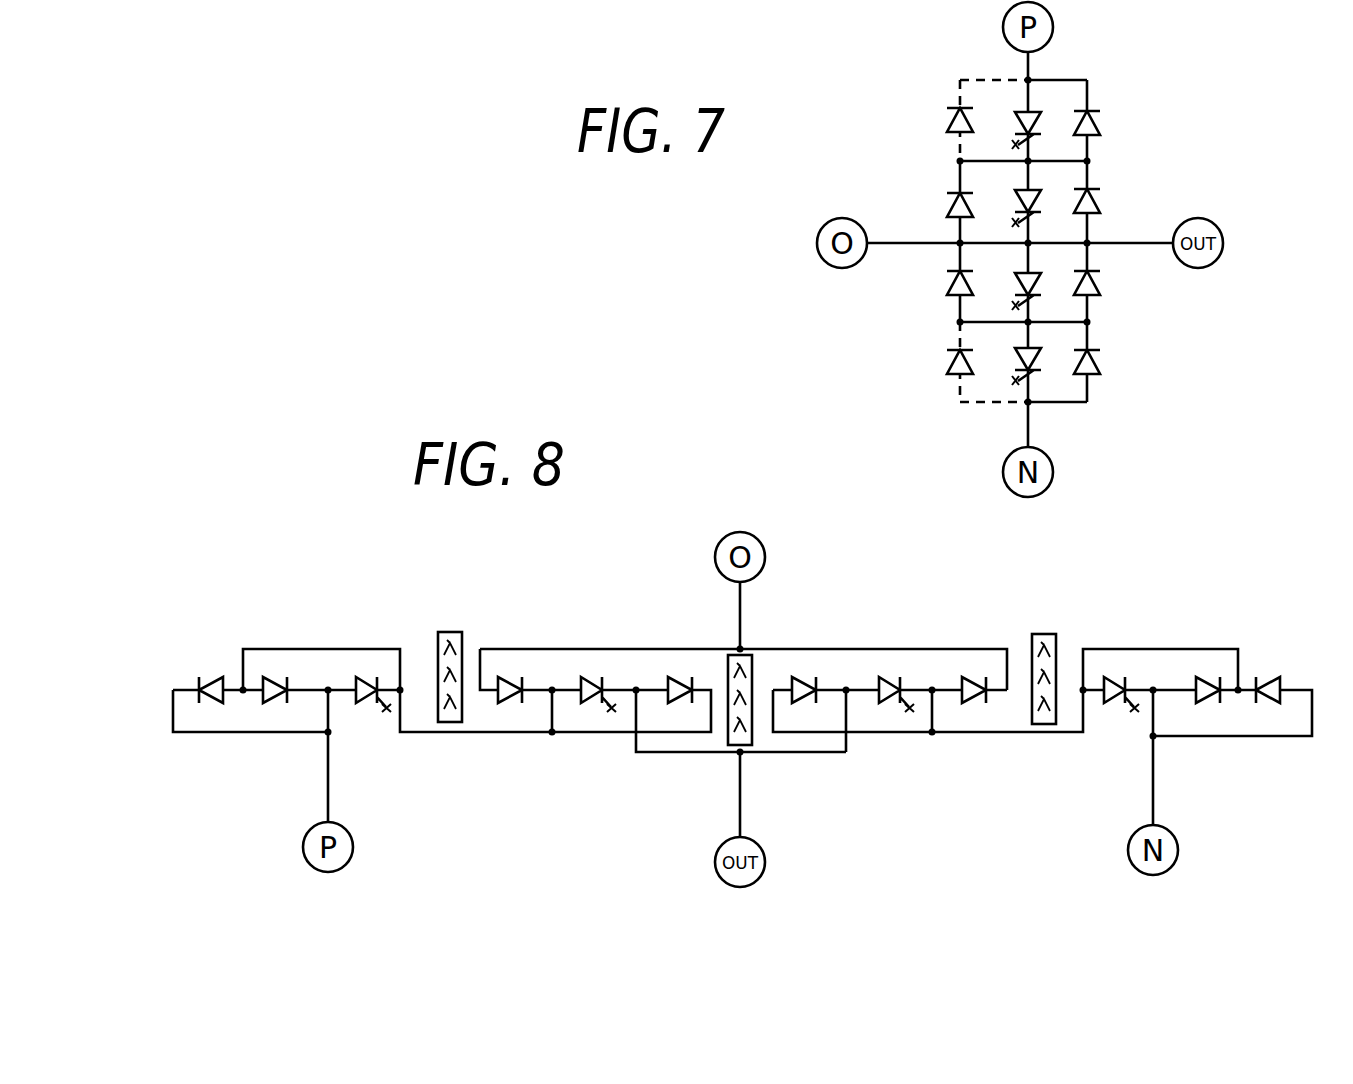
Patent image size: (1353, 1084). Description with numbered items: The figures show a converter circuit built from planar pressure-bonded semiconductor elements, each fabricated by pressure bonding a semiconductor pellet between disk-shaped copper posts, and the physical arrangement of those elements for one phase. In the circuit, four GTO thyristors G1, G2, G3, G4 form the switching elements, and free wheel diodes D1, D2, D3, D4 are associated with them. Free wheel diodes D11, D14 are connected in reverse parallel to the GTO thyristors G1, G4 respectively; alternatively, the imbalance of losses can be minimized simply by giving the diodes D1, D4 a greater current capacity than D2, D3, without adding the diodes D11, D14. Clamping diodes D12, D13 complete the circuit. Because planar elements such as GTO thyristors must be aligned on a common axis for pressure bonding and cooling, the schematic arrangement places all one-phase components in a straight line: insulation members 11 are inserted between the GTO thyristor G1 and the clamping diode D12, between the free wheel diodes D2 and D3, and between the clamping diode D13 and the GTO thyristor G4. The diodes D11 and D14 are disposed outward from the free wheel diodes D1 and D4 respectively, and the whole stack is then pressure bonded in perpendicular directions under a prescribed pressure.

In FIG. 7, the free wheel diode D1 is at (1094, 128).
In FIG. 8, the free wheel diode D1 is at (270, 677).
In FIG. 7, the free wheel diode D2 is at (1094, 200).
In FIG. 8, the free wheel diode D2 is at (678, 677).
In FIG. 7, the free wheel diode D3 is at (1094, 284).
In FIG. 8, the free wheel diode D3 is at (805, 677).
In FIG. 7, the free wheel diode D4 is at (1094, 361).
In FIG. 8, the free wheel diode D4 is at (1205, 677).
In FIG. 7, the free wheel diode D11 is at (947, 126).
In FIG. 8, the free wheel diode D11 is at (201, 674).
In FIG. 7, the clamping diode D12 is at (947, 208).
In FIG. 8, the clamping diode D12 is at (508, 677).
In FIG. 7, the clamping diode D13 is at (947, 292).
In FIG. 8, the clamping diode D13 is at (970, 677).
In FIG. 7, the free wheel diode D14 is at (947, 364).
In FIG. 8, the free wheel diode D14 is at (1272, 675).
In FIG. 7, the GTO thyristor G1 is at (1036, 112).
In FIG. 8, the GTO thyristor G1 is at (365, 677).
In FIG. 7, the GTO thyristor G2 is at (1037, 205).
In FIG. 8, the GTO thyristor G2 is at (593, 677).
In FIG. 7, the GTO thyristor G3 is at (1037, 287).
In FIG. 8, the GTO thyristor G3 is at (890, 677).
In FIG. 7, the GTO thyristor G4 is at (1037, 365).
In FIG. 8, the GTO thyristor G4 is at (1118, 677).
In FIG. 8, the insulation member 11 is at (450, 632).